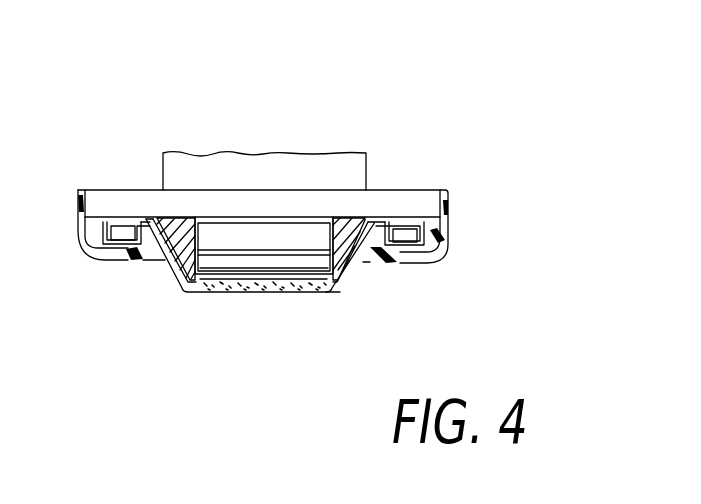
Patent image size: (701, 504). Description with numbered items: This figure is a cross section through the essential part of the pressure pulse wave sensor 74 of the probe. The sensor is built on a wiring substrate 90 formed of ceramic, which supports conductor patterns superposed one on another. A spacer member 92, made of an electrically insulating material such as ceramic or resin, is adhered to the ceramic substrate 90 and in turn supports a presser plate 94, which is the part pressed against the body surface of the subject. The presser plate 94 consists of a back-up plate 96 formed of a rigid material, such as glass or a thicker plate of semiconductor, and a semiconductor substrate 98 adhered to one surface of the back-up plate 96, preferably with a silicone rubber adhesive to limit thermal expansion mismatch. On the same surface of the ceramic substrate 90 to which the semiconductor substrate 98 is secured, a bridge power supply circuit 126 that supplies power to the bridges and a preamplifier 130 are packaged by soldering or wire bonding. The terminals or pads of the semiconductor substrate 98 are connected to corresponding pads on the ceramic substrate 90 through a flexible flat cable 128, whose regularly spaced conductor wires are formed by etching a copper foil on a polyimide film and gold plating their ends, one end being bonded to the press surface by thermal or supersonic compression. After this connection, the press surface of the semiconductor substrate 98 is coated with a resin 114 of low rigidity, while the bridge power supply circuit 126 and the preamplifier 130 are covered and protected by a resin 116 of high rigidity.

The pulse wave sensor 74 is at (347, 90).
The wiring substrate 90 is at (432, 200).
The spacer member 92 is at (221, 238).
The presser plate 94 is at (246, 296).
The back-up plate 96 is at (310, 262).
The semiconductor substrate 98 is at (287, 258).
The resin of low rigidity 114 is at (353, 266).
The resin of high rigidity 116 is at (446, 248).
The bridge power supply circuit 126 is at (114, 228).
The flexible flat cable 128 is at (170, 278).
The preamplifier 130 is at (416, 233).